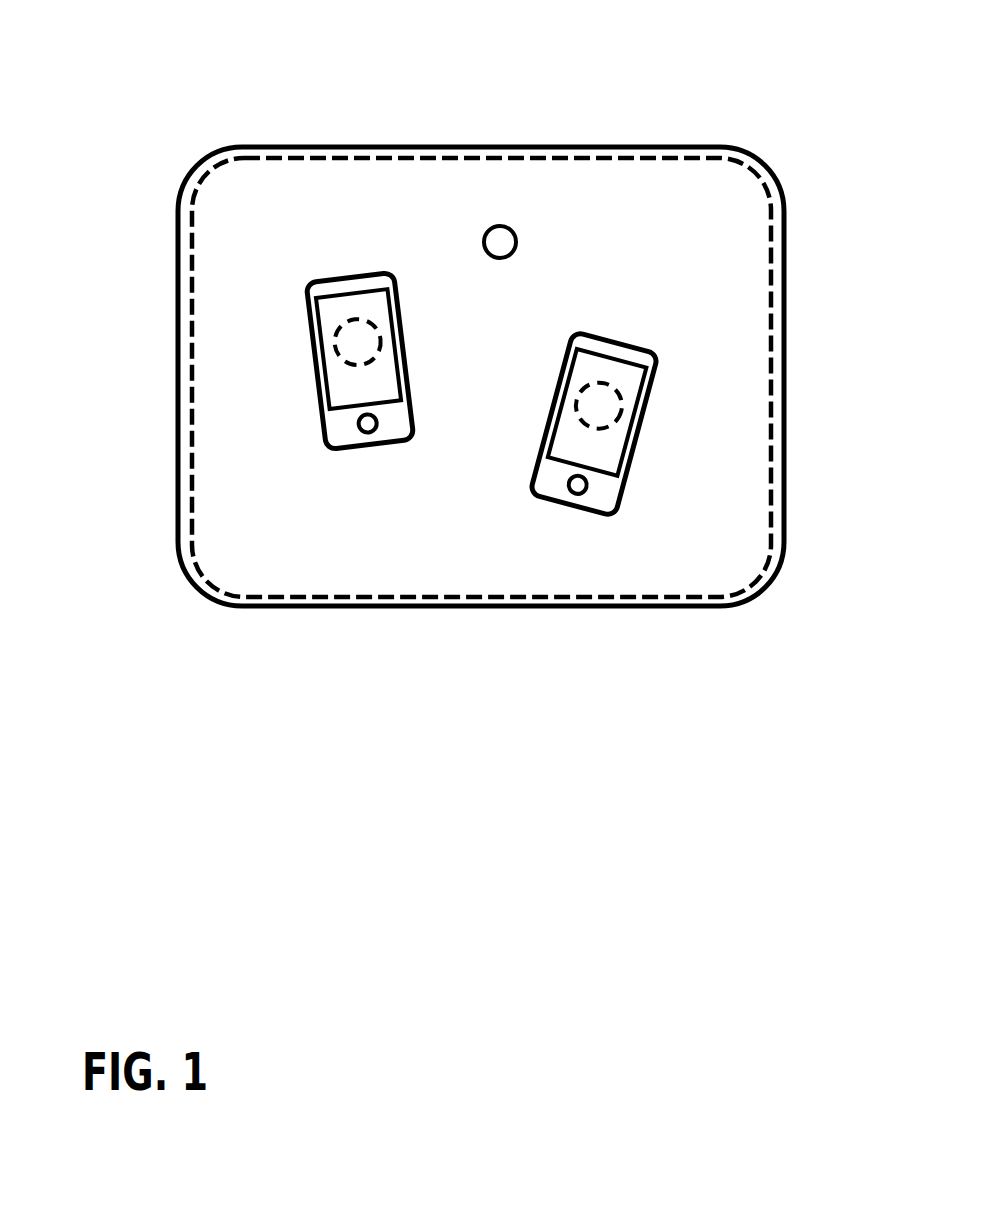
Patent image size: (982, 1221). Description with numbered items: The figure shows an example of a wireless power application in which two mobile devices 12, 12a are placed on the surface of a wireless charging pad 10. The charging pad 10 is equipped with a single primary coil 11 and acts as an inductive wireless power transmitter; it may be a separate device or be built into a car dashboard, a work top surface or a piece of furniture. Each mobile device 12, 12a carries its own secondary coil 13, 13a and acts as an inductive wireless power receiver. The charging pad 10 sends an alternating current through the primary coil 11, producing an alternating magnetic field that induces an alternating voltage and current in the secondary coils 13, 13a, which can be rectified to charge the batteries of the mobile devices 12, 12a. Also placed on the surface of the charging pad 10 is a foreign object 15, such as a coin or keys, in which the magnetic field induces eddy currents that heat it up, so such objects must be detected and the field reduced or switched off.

The wireless charging pad 10 is at (313, 145).
The primary coil 11 is at (588, 158).
The foreign object 15 is at (490, 224).
The mobile device 12 is at (366, 445).
The secondary coil 13 is at (357, 368).
The mobile device 12a is at (543, 497).
The secondary coil 13a is at (612, 427).